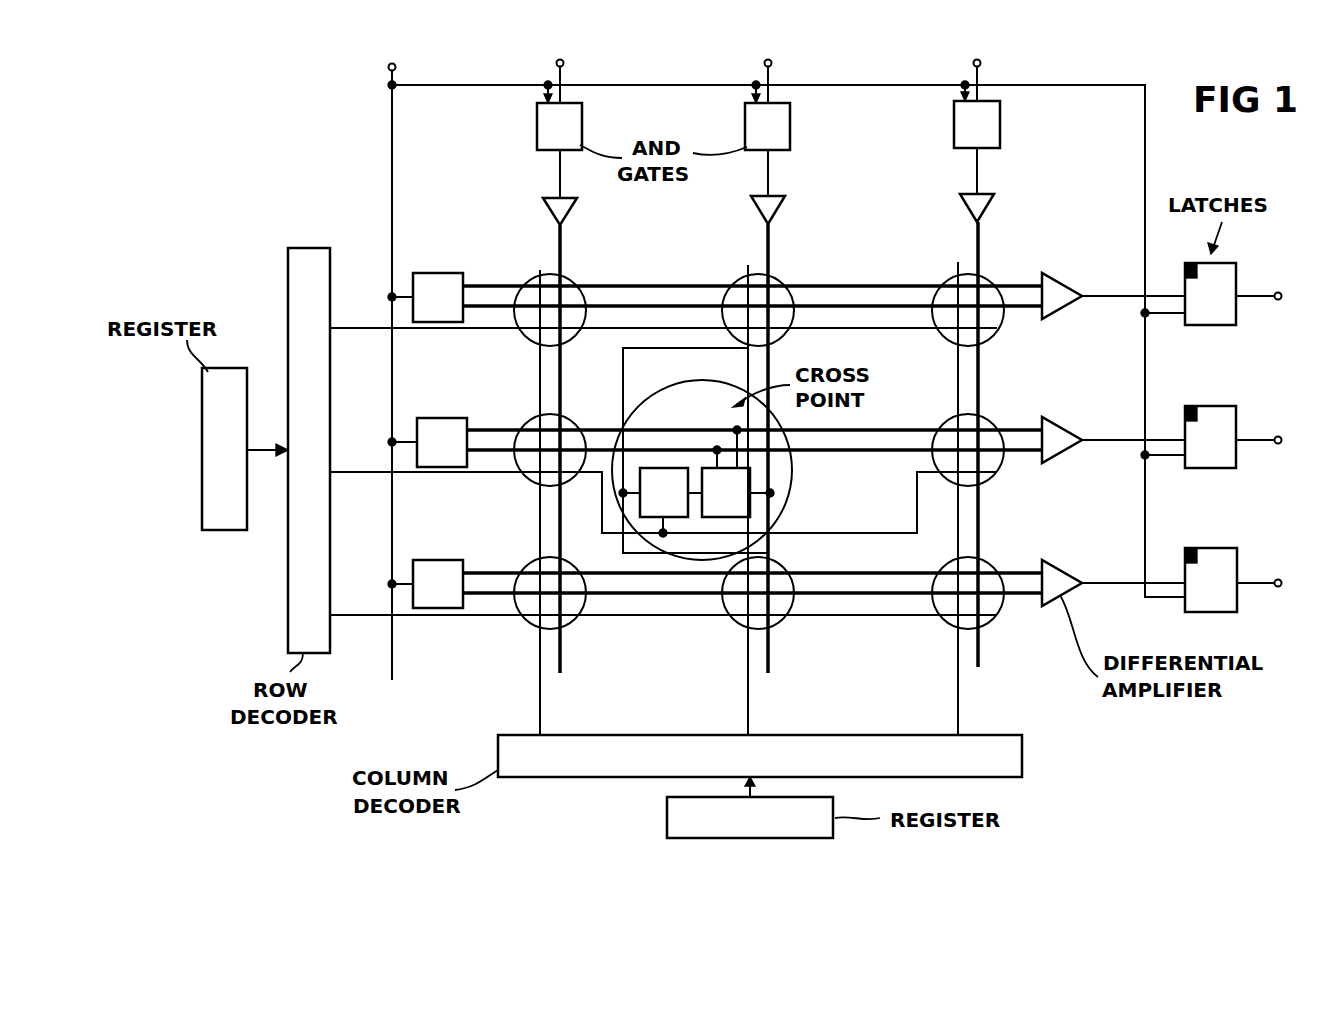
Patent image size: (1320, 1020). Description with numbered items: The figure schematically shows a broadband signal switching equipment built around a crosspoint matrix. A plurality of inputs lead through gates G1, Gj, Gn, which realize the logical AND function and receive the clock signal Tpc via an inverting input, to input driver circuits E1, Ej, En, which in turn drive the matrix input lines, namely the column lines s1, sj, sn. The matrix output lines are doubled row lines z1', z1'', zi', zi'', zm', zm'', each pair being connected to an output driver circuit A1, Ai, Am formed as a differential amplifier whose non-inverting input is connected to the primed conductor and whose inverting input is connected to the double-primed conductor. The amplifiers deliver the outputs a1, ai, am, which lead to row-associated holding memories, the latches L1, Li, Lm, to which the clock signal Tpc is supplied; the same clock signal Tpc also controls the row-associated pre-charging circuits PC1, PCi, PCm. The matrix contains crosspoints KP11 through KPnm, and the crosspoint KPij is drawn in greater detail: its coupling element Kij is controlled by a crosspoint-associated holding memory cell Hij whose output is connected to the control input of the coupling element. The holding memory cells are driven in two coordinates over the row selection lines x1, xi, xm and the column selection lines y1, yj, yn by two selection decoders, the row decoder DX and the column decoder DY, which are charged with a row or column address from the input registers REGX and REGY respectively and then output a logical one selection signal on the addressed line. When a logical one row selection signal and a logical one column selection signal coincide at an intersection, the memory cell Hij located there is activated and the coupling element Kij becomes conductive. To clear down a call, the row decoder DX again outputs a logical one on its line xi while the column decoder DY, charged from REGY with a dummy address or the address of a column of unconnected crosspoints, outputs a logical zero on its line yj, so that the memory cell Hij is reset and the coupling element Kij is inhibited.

The clock signal Tpc is at (786, 359).
The gate G1 is at (556, 103).
The gate Gj is at (744, 101).
The gate Gn is at (967, 97).
The input driver circuit E1 is at (581, 191).
The input driver circuit Ej is at (782, 191).
The input driver circuit En is at (996, 190).
The column line s1 is at (581, 449).
The column line sj is at (783, 448).
The column line sn is at (960, 444).
The selection line y1 is at (528, 502).
The selection line yj is at (765, 500).
The selection line yn is at (978, 498).
The input register REGX is at (226, 449).
The row decoder DX is at (309, 450).
The pre-charging circuit PC1 is at (425, 297).
The pre-charging circuit PCi is at (427, 442).
The pre-charging circuit PCm is at (428, 584).
The row line z1' is at (752, 268).
The row line z1'' is at (754, 324).
The row line zi' is at (754, 413).
The row line zi'' is at (754, 468).
The row line zm' is at (752, 557).
The row line zm'' is at (759, 610).
The selection line x1 is at (663, 312).
The selection line xi is at (663, 489).
The selection line xm is at (663, 599).
The crosspoint KP11 is at (573, 328).
The crosspoint KPij is at (732, 454).
The crosspoint KPnm is at (999, 611).
The holding memory cell Hij is at (664, 502).
The coupling element Kij is at (726, 471).
The output driver circuit A1 is at (1069, 285).
The output driver circuit Ai is at (1065, 428).
The output driver circuit Am is at (1075, 572).
The output a1 is at (1133, 314).
The output ai is at (1133, 457).
The output am is at (1133, 597).
The holding memory L1 is at (1222, 294).
The holding memory Li is at (1219, 437).
The holding memory Lm is at (1247, 580).
The column decoder DY is at (760, 756).
The input register REGY is at (750, 807).